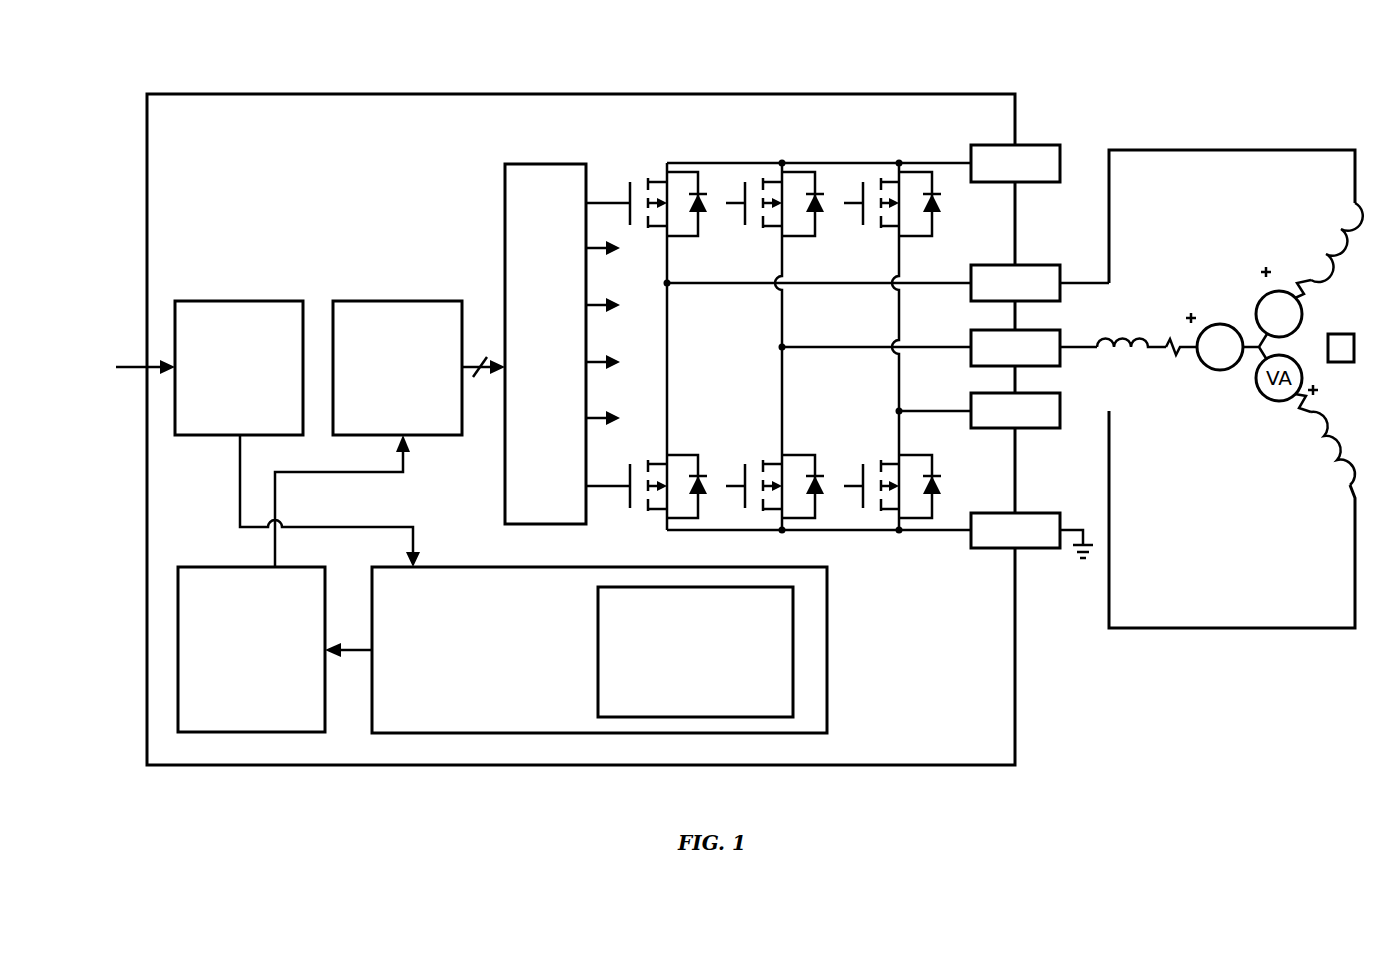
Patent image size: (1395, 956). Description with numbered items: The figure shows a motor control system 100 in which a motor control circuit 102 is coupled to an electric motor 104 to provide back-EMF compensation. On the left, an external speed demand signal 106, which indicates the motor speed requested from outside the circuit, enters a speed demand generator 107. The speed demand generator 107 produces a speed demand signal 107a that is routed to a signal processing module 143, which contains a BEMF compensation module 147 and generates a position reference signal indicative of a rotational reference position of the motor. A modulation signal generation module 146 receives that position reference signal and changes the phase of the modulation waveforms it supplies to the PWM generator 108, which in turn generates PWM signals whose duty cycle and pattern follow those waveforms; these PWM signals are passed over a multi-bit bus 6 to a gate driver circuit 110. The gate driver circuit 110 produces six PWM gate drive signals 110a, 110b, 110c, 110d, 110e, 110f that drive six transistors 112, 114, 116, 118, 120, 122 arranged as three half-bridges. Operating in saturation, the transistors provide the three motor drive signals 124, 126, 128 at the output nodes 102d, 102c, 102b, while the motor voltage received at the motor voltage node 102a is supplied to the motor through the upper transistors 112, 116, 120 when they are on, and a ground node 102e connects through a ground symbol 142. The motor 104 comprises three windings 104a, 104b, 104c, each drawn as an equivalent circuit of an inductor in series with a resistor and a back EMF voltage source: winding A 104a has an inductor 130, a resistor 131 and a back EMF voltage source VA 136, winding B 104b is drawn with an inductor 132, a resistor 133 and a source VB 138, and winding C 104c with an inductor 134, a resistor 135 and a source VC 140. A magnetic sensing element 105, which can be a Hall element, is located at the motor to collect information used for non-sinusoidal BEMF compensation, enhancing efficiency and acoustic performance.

The motor control system 100 is at (1025, 67).
The motor control circuit 102 is at (581, 429).
The motor voltage node 102a is at (987, 145).
The OUTC node 102b is at (1047, 265).
The OUTB node 102c is at (970, 330).
The OUTA node 102d is at (970, 393).
The GND pin 102e is at (972, 513).
The electric motor 104 is at (1203, 128).
The winding A 104a is at (1315, 480).
The winding B 104b is at (1188, 310).
The winding C 104c is at (1298, 248).
The magnetic sensing element 105 is at (1343, 363).
The external speed demand signal 106 is at (131, 368).
The speed demand generator 107 is at (239, 368).
The speed demand signal 107a is at (240, 508).
The PWM generator 108 is at (397, 368).
The gate driver circuit 110 is at (545, 344).
The PWM gate drive signal 110a is at (601, 203).
The PWM gate drive signal 110b is at (595, 250).
The PWM gate drive signal 110c is at (595, 307).
The PWM gate drive signal 110d is at (595, 364).
The PWM gate drive signal 110e is at (595, 420).
The PWM gate drive signal 110f is at (607, 488).
The upper transistor 112 is at (684, 237).
The lower transistor 114 is at (687, 454).
The upper transistor 116 is at (800, 237).
The lower transistor 118 is at (784, 453).
The upper transistor 120 is at (921, 237).
The lower transistor 122 is at (918, 455).
The motor drive signal VoutA 124 is at (1109, 598).
The motor drive signal VoutB 126 is at (1076, 345).
The motor drive signal OutC 128 is at (1108, 168).
The inductor 130 is at (1340, 488).
The resistor 131 is at (1305, 422).
The winding B inductor 132 is at (1125, 356).
The winding B resistor 133 is at (1172, 354).
The winding C inductor 134 is at (1328, 234).
The winding C resistor 135 is at (1316, 278).
The back EMF voltage source VA 136 is at (1270, 400).
The back EMF voltage source VB 138 is at (1204, 367).
The back EMF voltage source VC 140 is at (1303, 306).
The ground connection 142 is at (1075, 527).
The signal processing module 143 is at (576, 650).
The modulation signal generation module 146 is at (294, 583).
The BEMF compensation module 147 is at (695, 652).
The bus width indicator 6 is at (483, 352).